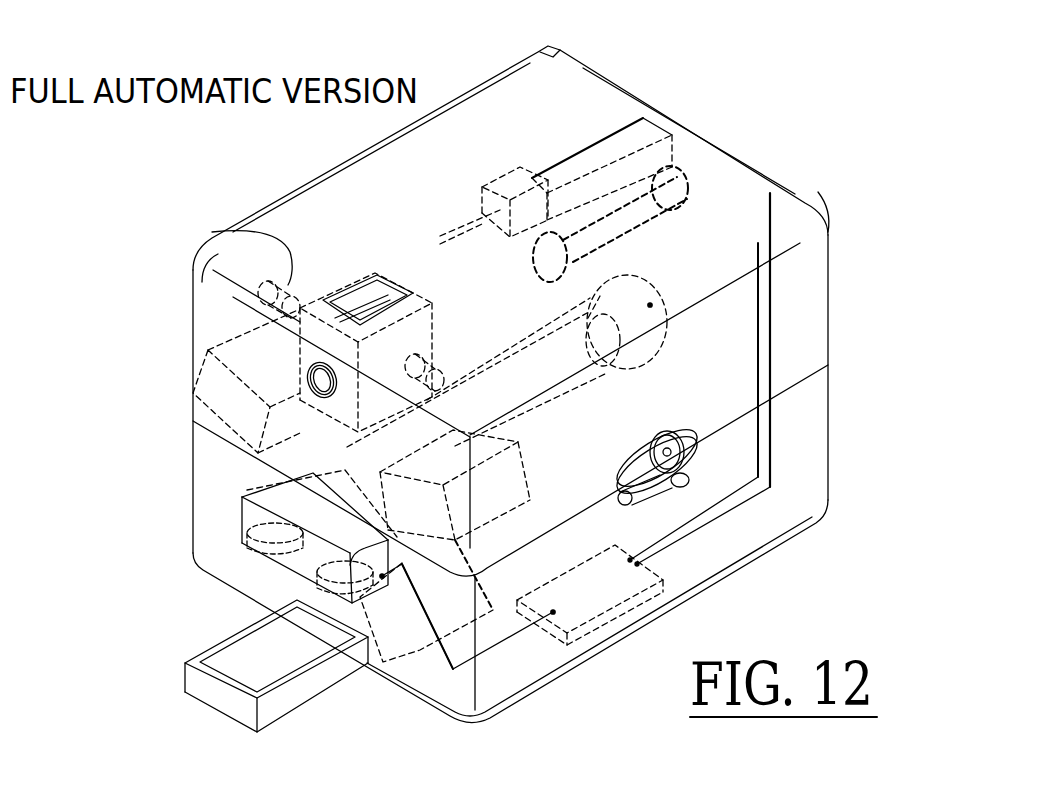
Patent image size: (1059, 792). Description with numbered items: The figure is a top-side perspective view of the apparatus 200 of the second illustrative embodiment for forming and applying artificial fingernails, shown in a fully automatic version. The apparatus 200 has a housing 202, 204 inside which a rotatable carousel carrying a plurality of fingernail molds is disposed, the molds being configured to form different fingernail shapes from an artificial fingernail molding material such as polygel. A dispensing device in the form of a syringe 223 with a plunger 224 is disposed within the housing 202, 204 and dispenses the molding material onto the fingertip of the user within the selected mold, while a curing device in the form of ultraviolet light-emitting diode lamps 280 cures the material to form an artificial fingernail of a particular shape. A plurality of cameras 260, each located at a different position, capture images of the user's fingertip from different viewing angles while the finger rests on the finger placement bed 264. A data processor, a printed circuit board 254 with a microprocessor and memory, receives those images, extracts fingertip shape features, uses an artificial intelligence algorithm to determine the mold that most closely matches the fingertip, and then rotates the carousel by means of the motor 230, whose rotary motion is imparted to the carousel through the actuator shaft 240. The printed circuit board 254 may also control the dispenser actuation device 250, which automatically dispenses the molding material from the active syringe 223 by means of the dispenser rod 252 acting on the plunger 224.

The apparatus 200 is at (642, 672).
The housing 202 is at (813, 477).
The housing 204 is at (815, 320).
The syringe 223 is at (480, 278).
The plunger 224 is at (630, 231).
The motor 230 is at (653, 343).
The actuator shaft 240 is at (540, 352).
The dispenser actuation device 250 is at (505, 189).
The dispenser rod 252 is at (526, 182).
The printed circuit board 254 is at (693, 568).
The camera 260 is at (315, 593).
The finger placement bed 264 is at (273, 647).
The ultraviolet light-emitting diode lamp 280 is at (413, 367).